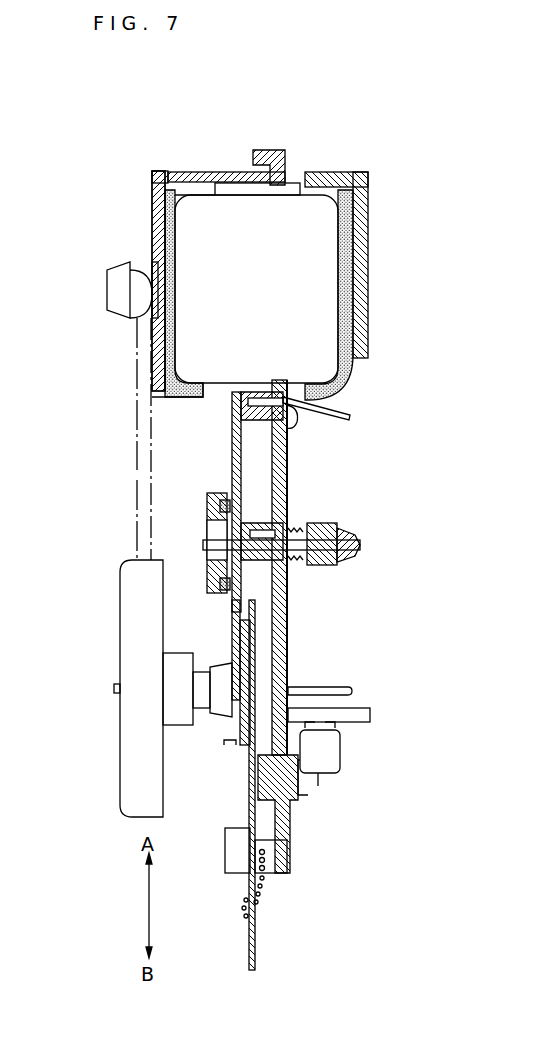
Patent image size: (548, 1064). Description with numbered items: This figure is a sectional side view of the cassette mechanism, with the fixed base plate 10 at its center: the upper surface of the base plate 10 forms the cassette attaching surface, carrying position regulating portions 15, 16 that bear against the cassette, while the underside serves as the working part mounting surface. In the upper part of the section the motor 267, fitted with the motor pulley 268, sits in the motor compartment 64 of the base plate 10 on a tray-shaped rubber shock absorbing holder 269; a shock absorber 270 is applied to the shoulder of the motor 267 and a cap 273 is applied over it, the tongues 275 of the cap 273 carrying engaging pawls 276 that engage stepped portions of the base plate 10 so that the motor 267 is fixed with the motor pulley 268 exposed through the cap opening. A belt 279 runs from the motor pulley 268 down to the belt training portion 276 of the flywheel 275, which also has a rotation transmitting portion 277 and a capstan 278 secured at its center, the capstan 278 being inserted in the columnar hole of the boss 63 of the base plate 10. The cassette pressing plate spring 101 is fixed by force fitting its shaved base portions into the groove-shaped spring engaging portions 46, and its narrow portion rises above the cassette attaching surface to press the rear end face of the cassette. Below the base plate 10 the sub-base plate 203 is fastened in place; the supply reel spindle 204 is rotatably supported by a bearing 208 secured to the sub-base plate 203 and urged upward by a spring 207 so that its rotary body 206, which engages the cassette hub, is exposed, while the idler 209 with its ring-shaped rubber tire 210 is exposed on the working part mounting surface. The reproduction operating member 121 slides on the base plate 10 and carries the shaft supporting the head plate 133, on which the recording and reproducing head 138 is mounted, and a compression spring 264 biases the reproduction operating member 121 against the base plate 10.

The motor compartment 64 is at (366, 266).
The shock absorbing holder 269 is at (344, 272).
The motor 267 is at (190, 260).
The shock absorber 270 is at (232, 200).
The cap 273 is at (162, 172).
The flywheel 275 is at (218, 178).
The belt training portion 276 is at (285, 165).
The motor pulley 268 is at (108, 290).
The belt 279 is at (137, 412).
The sub-base plate 203 is at (212, 502).
The base plate 10 is at (322, 482).
The spring engaging portion 46 is at (248, 418).
The cassette pressing plate spring 101 is at (348, 410).
The position regulating portion 15 is at (299, 424).
The idler 209 is at (207, 525).
The rubber tire 210 is at (222, 500).
The bearing 208 is at (265, 525).
The supply reel spindle 204 is at (418, 572).
The rotary body 206 is at (338, 528).
The spring 207 is at (292, 562).
The rotation transmitting portion 277 is at (180, 655).
The boss 63 is at (222, 718).
The reproduction operating member 121 is at (256, 945).
The capstan 278 is at (330, 688).
The position regulating portion 16 is at (370, 716).
The recording and reproducing head 138 is at (338, 755).
The head plate 133 is at (290, 790).
The compression spring 264 is at (275, 870).